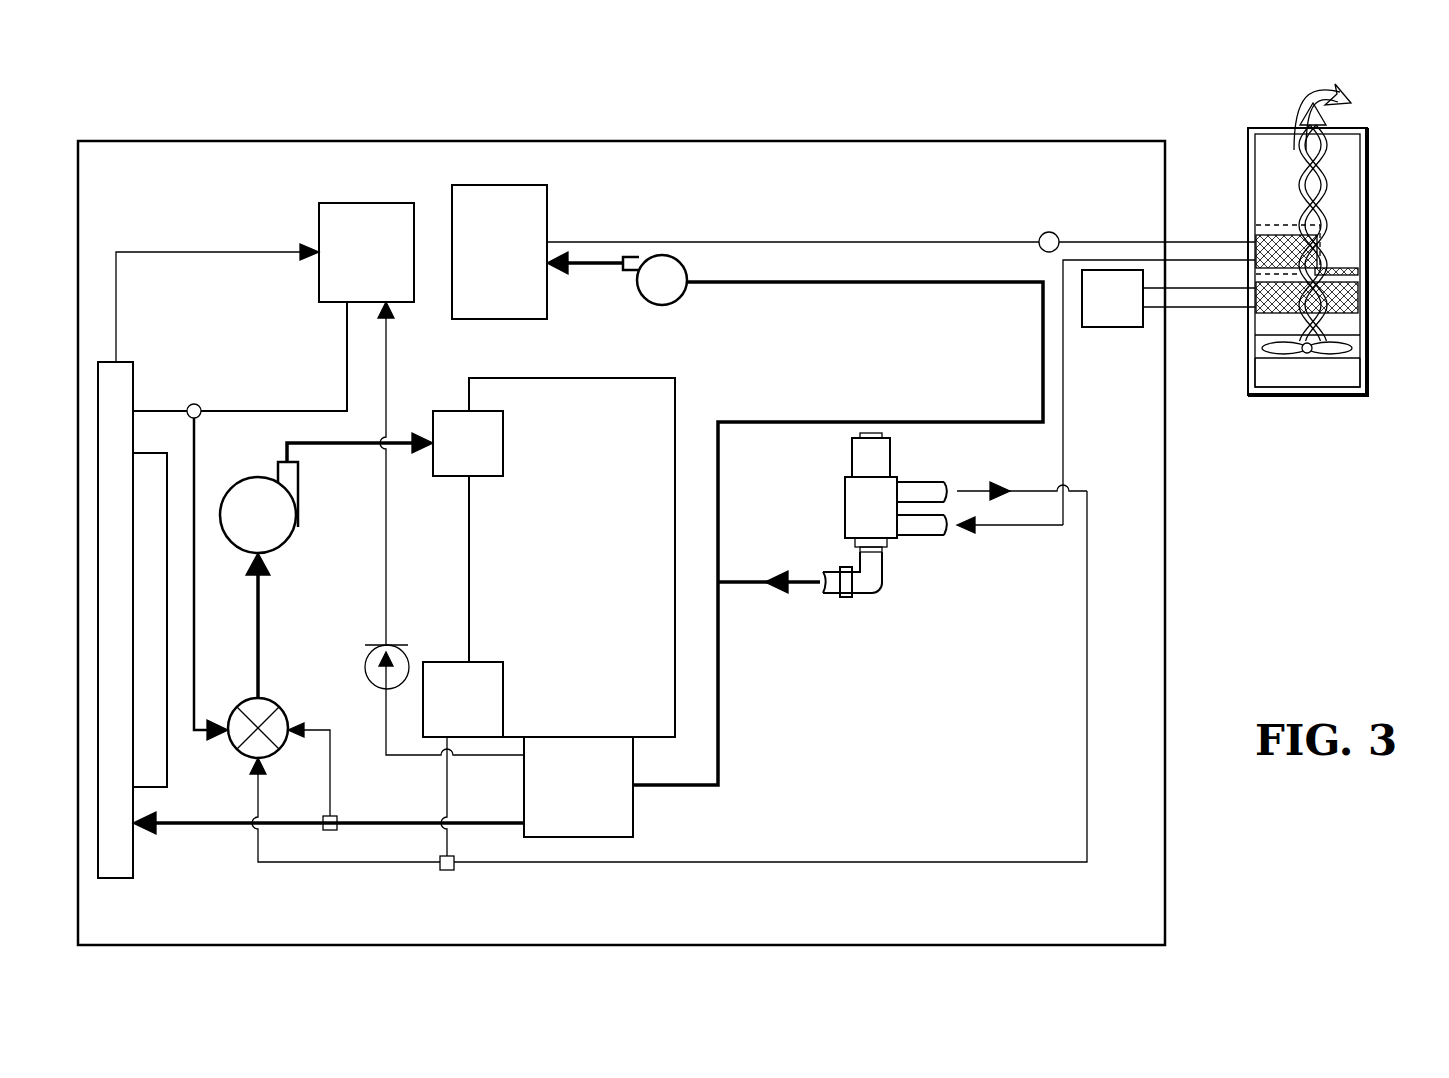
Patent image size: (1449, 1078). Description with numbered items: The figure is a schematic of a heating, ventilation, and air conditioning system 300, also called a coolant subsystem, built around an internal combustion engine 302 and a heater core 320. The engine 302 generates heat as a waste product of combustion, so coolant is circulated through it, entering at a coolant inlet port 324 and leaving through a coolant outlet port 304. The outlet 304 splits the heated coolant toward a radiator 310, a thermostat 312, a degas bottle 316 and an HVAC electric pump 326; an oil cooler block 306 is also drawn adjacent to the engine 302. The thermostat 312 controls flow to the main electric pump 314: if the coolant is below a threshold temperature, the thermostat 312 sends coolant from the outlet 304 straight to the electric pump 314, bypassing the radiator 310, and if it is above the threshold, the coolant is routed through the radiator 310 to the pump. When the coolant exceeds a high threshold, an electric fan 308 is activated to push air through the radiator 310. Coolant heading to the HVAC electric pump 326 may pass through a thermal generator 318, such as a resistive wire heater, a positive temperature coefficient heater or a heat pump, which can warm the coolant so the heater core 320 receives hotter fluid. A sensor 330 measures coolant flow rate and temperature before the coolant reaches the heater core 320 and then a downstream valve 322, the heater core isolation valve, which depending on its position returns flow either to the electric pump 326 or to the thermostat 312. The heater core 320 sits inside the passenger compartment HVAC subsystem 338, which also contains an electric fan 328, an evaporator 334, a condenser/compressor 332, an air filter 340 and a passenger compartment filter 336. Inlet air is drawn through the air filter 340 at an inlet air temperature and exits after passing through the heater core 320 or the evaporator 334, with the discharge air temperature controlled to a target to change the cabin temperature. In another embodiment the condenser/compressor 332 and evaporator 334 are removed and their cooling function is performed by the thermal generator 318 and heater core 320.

The heating, ventilation, and air conditioning (HVAC) system 300 is at (1072, 86).
The internal combustion engine 302 is at (572, 557).
The coolant outlet port 304 is at (578, 787).
The oil cooler 306 is at (463, 699).
The electric fan 308 is at (148, 453).
The radiator 310 is at (135, 860).
The thermostat 312 is at (270, 701).
The main electric pump 314 is at (282, 548).
The degas bottle 316 is at (366, 252).
The thermal generator 318 is at (499, 252).
The heater core 320 is at (1287, 233).
The downstream valve 322 is at (895, 475).
The coolant inlet port 324 is at (468, 443).
The HVAC electric pump 326 is at (662, 268).
The electric fan 328 is at (1295, 358).
The sensor 330 is at (1057, 233).
The condenser/compressor 332 is at (1112, 298).
The evaporator 334 is at (1350, 298).
The passenger compartment filter 336 is at (1340, 268).
The passenger compartment HVAC subsystem 338 is at (1380, 136).
The air filter 340 is at (1335, 378).